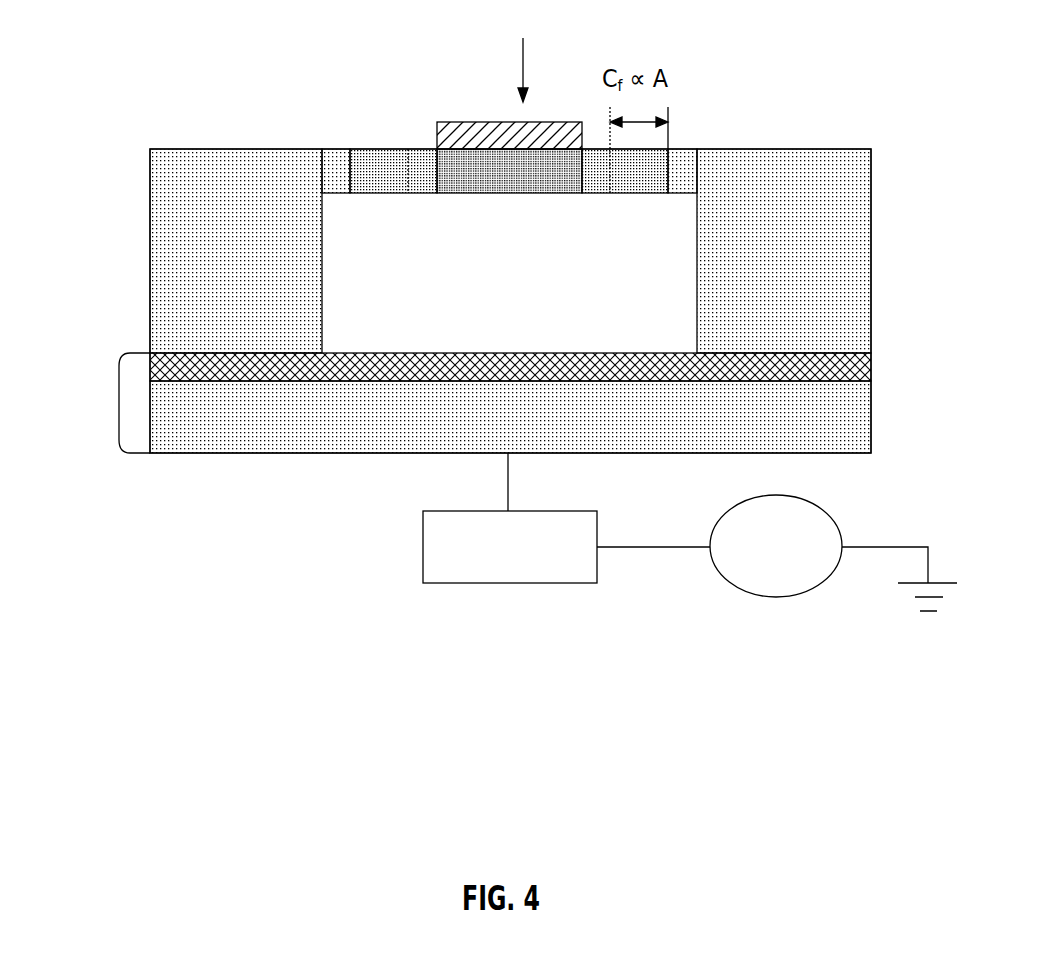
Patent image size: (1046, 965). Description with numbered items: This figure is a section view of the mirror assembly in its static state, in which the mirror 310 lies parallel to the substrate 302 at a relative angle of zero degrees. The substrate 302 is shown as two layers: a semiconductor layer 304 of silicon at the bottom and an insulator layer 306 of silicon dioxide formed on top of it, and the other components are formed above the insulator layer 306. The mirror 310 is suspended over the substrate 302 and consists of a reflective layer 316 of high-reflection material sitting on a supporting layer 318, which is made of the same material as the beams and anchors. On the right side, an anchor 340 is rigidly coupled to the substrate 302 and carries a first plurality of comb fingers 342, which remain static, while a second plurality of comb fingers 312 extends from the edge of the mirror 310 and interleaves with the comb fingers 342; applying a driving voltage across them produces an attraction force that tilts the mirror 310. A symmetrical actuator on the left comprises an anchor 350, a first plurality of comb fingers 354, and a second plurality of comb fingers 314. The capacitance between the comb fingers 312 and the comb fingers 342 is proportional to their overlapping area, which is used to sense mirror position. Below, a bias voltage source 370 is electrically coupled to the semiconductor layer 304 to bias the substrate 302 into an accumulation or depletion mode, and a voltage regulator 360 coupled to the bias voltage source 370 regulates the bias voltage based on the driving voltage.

The substrate 302 is at (119, 402).
The semiconductor layer 304 is at (870, 422).
The insulator layer 306 is at (870, 365).
The mirror 310 is at (523, 56).
The second plurality of comb fingers 312 is at (595, 178).
The second plurality of comb fingers 314 is at (428, 180).
The reflective layer 316 is at (478, 130).
The supporting layer 318 is at (485, 182).
The anchor 340 is at (784, 251).
The first plurality of comb fingers 342 is at (683, 163).
The anchor 350 is at (236, 251).
The first plurality of comb fingers 354 is at (342, 168).
The voltage regulator 360 is at (510, 518).
The bias voltage source 370 is at (777, 553).